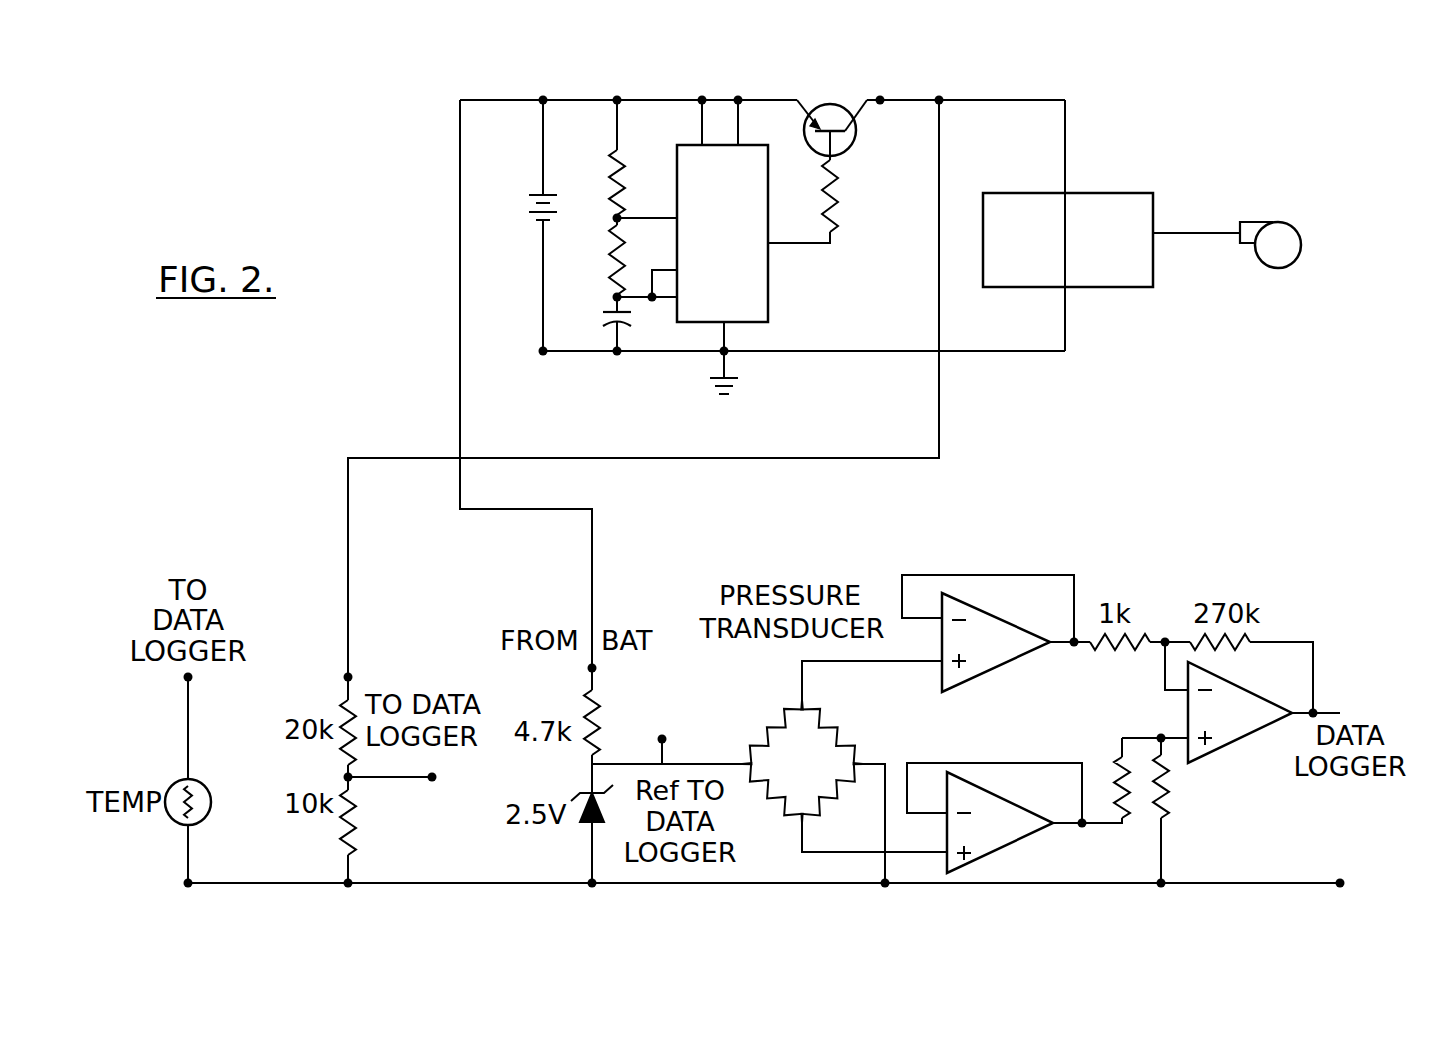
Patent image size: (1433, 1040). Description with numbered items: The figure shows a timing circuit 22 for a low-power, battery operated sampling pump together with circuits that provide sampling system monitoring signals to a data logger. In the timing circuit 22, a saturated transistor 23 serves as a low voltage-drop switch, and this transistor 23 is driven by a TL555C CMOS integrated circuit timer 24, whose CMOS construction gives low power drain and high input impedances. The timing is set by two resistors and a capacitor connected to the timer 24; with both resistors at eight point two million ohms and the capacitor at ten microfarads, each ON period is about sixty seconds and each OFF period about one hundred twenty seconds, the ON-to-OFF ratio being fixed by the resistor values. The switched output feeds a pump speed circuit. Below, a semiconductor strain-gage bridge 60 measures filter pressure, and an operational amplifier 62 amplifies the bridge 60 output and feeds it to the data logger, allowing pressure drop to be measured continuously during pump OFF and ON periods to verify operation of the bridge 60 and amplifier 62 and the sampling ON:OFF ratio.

The timing circuit 22 is at (888, 68).
The saturated transistor 23 is at (851, 141).
The integrated circuit timer 24 is at (768, 297).
The semiconductor strain-gage bridge 60 is at (850, 718).
The operational amplifier 62 is at (1315, 633).